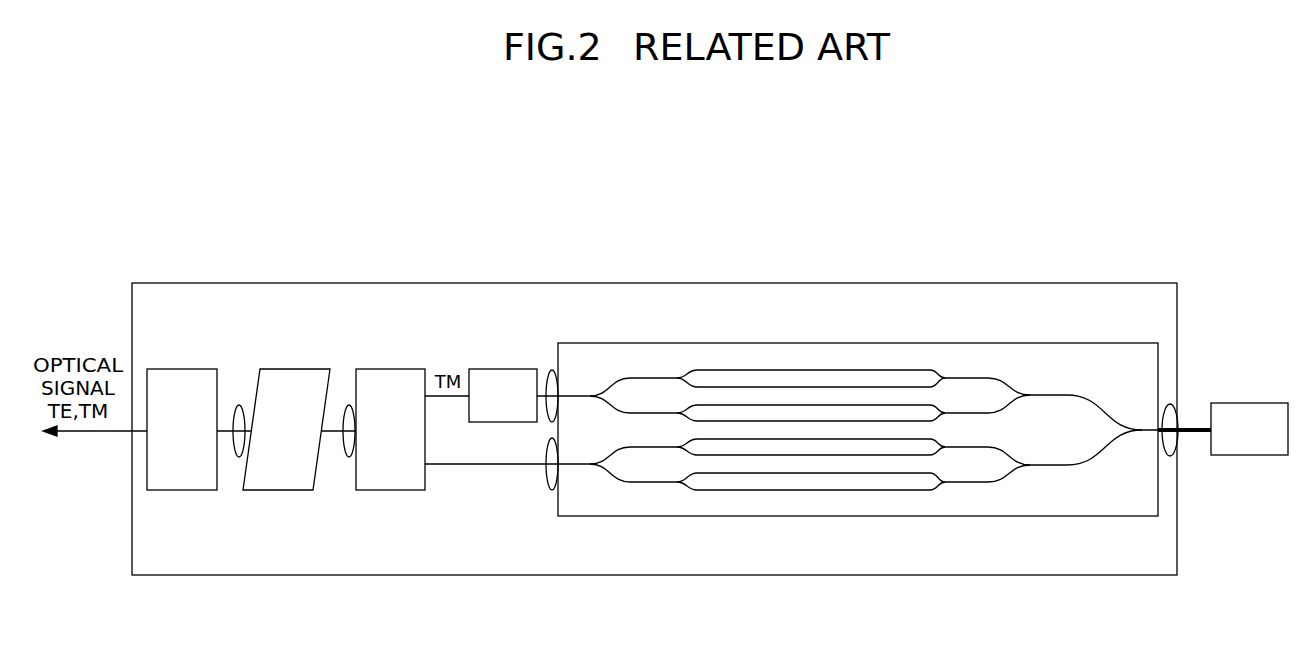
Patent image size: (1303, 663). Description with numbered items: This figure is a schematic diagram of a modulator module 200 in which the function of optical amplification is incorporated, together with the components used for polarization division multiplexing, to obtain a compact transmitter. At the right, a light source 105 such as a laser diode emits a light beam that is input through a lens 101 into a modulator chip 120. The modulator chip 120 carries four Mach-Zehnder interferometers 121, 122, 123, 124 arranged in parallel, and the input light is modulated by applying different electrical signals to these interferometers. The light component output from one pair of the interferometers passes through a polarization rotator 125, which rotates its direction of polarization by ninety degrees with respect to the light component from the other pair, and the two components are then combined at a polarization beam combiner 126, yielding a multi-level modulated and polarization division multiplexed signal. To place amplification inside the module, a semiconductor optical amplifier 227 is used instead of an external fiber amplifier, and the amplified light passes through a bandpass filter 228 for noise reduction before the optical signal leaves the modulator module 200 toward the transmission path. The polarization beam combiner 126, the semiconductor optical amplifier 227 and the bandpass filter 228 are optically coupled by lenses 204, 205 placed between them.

The modulator module 200 is at (1100, 283).
The modulator chip 120 is at (858, 430).
The Mach-Zehnder interferometer 121 is at (783, 369).
The Mach-Zehnder interferometer 122 is at (829, 404).
The Mach-Zehnder interferometer 123 is at (771, 457).
The Mach-Zehnder interferometer 124 is at (843, 492).
The polarization rotator 125 is at (500, 369).
The polarization beam combiner 126 is at (390, 369).
The semiconductor optical amplifier 227 is at (288, 369).
The bandpass filter 228 is at (185, 369).
The lens 204 is at (347, 452).
The lens 205 is at (237, 452).
The light source 105 is at (1250, 403).
The lens 101 is at (1176, 446).